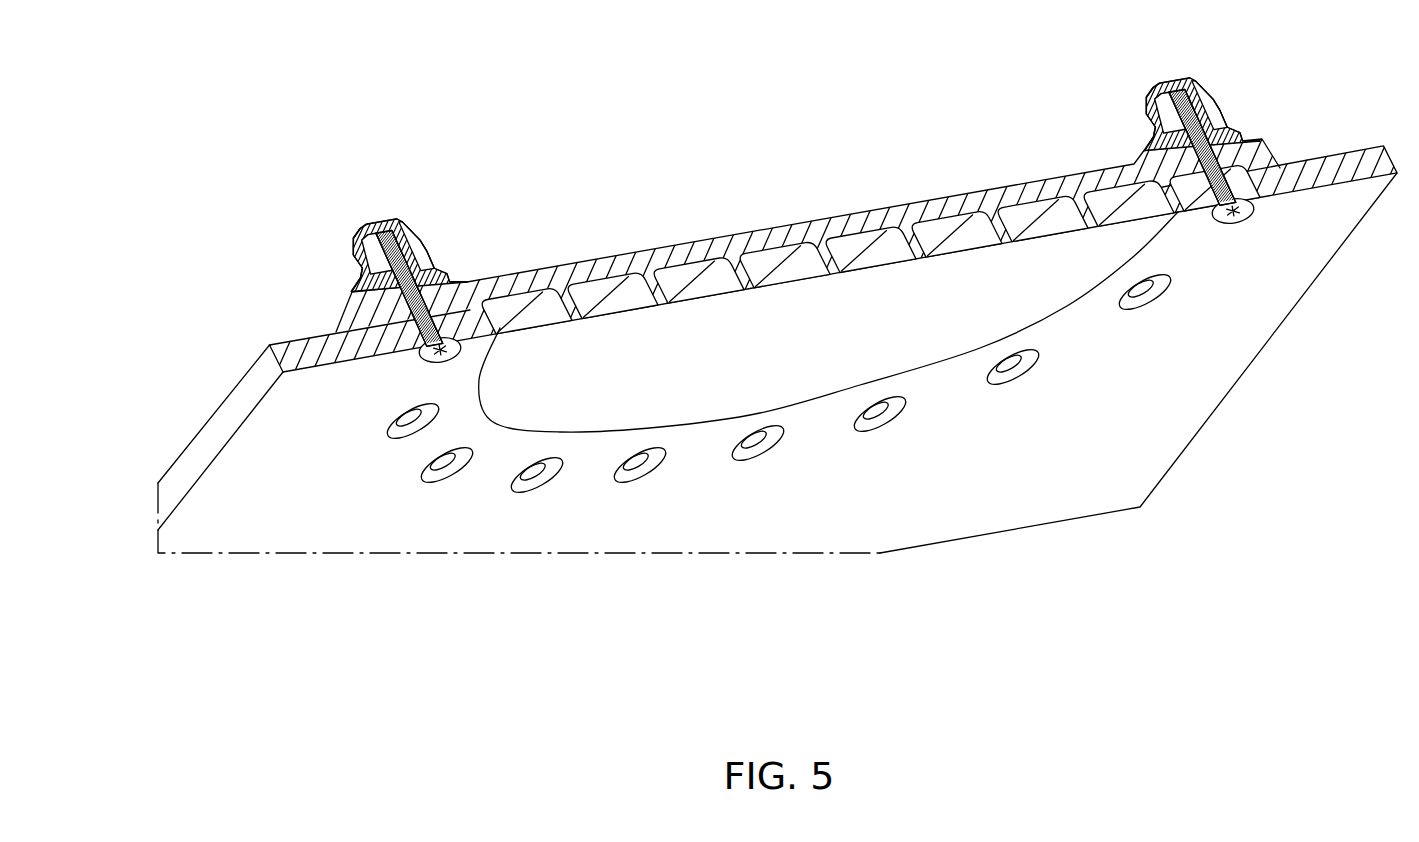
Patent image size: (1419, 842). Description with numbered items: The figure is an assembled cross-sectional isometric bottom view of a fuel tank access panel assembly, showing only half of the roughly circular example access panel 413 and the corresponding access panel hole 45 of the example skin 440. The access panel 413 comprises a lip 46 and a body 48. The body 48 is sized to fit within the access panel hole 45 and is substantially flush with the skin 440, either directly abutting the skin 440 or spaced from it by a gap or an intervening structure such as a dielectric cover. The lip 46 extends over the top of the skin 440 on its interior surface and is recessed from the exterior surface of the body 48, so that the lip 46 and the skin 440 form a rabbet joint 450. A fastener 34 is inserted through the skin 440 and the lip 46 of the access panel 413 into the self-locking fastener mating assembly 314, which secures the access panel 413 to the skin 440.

The skin 440 is at (190, 412).
The lip 46 is at (335, 308).
The access panel 413 is at (680, 228).
The rabbet joint 450 is at (493, 307).
The access panel hole 45 is at (501, 412).
The body 48 is at (798, 360).
The self-locking fastener mating assembly 314 is at (350, 217).
The fastener 34 is at (353, 295).